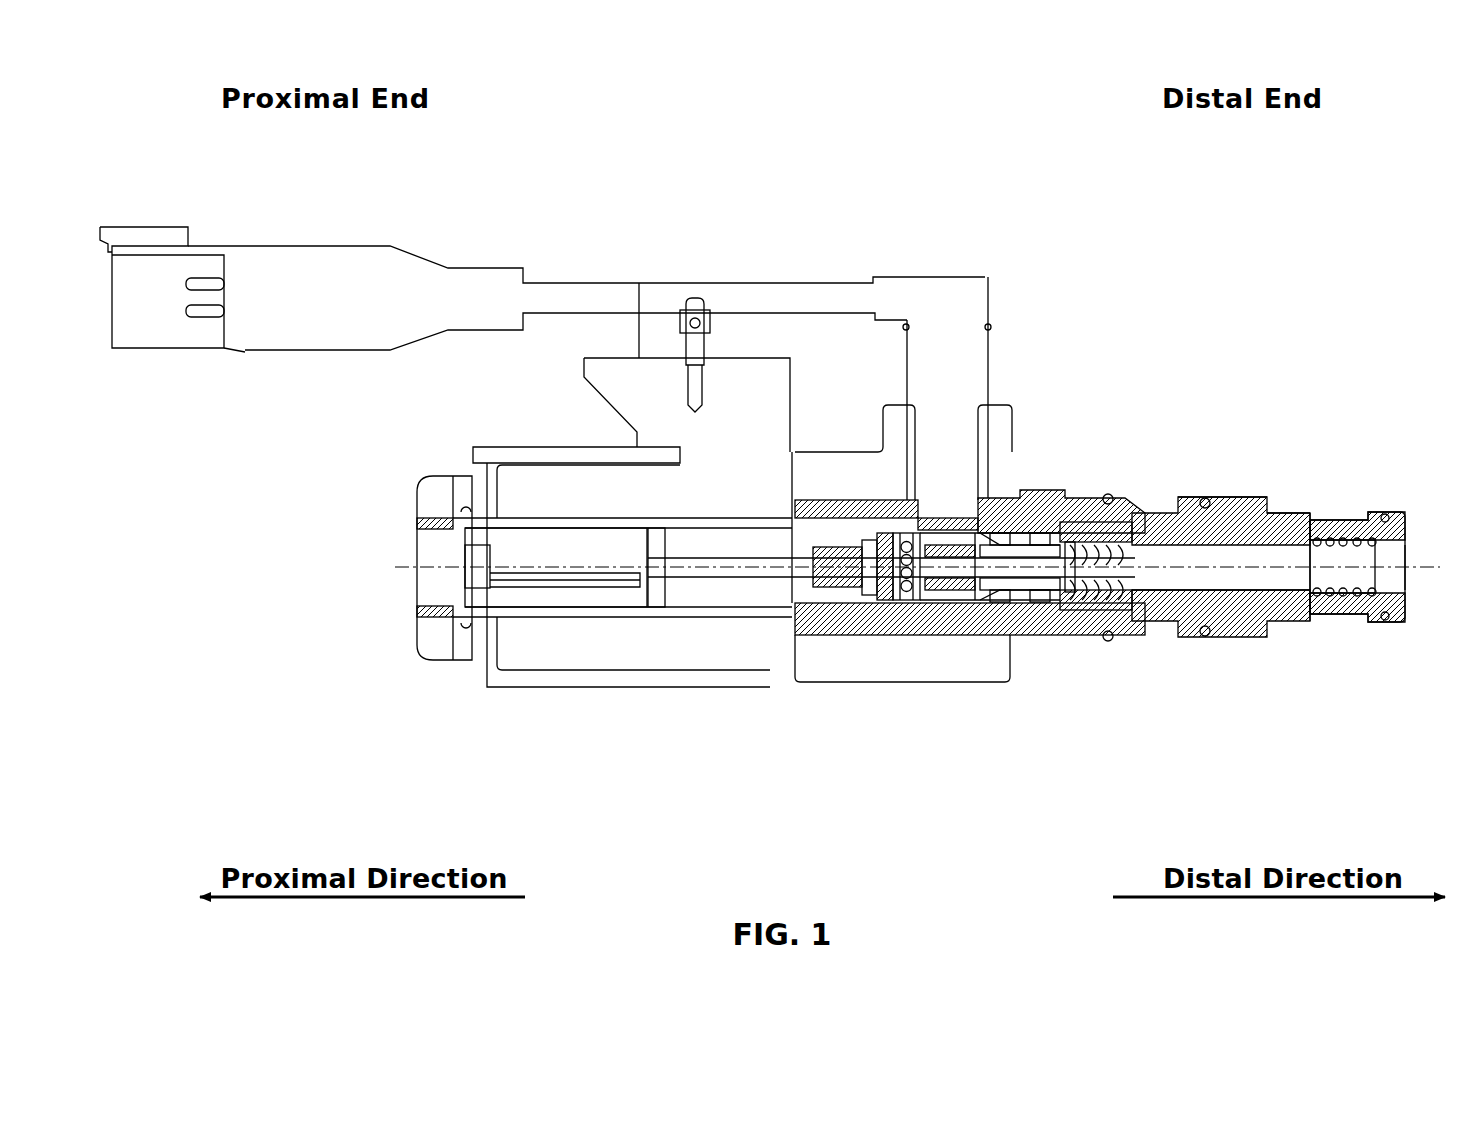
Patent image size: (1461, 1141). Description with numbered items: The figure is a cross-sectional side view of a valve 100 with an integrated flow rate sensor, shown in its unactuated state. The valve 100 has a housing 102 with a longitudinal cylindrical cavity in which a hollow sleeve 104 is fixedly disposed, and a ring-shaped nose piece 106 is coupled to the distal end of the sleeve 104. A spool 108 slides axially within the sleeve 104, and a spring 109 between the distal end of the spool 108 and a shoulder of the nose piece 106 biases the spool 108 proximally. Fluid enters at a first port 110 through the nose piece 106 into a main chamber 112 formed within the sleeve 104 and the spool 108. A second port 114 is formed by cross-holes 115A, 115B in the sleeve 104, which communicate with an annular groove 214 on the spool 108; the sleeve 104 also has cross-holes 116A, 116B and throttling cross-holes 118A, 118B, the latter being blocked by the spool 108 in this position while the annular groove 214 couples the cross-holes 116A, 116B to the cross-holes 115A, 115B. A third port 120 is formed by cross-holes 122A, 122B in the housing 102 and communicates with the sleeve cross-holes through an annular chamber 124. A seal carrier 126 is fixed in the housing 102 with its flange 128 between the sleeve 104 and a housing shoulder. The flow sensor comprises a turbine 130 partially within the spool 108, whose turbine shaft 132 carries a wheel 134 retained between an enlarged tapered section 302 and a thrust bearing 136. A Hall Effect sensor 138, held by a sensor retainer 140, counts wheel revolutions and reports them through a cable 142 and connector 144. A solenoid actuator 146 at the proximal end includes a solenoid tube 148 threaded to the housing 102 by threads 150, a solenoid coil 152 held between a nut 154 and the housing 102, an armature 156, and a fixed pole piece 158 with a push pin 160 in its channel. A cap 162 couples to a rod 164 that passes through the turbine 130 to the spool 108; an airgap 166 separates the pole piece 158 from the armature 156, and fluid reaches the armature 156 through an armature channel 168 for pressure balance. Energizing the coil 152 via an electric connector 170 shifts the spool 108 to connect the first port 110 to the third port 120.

The valve 100 is at (373, 240).
The housing 102 is at (1160, 512).
The sleeve 104 is at (1350, 520).
The nose piece 106 is at (1405, 514).
The spool 108 is at (1283, 517).
The spring 109 is at (1323, 577).
The first port 110 is at (1412, 588).
The main chamber 112 is at (1284, 602).
The second port 114 is at (1328, 508).
The cross-hole 115A is at (1245, 511).
The cross-hole 115B is at (1270, 625).
The cross-hole 116A is at (1122, 522).
The cross-hole 116B is at (1082, 607).
The throttling cross-hole 118A is at (1020, 530).
The throttling cross-hole 118B is at (1068, 609).
The third port 120 is at (1146, 468).
The cross-hole 122A is at (1145, 500).
The cross-hole 122B is at (1118, 606).
The annular chamber 124 is at (1066, 525).
The seal carrier 126 is at (1012, 592).
The flange 128 is at (1015, 528).
The turbine 130 is at (1080, 512).
The turbine shaft 132 is at (985, 602).
The wheel 134 is at (940, 592).
The thrust bearing 136 is at (906, 607).
The Hall Effect sensor 138 is at (948, 453).
The sensor retainer 140 is at (830, 451).
The cable 142 is at (780, 283).
The connector 144 is at (172, 228).
The solenoid actuator 146 is at (500, 444).
The solenoid tube 148 is at (757, 614).
The threads 150 is at (812, 632).
The solenoid coil 152 is at (502, 655).
The nut 154 is at (445, 662).
The armature 156 is at (585, 545).
The pole piece 158 is at (722, 592).
The push pin 160 is at (720, 556).
The cap 162 is at (808, 622).
The rod 164 is at (835, 592).
The airgap 166 is at (655, 600).
The armature channel 168 is at (597, 590).
The electric connector 170 is at (695, 296).
The annular groove 214 is at (1228, 602).
The enlarged tapered section 302 is at (952, 602).